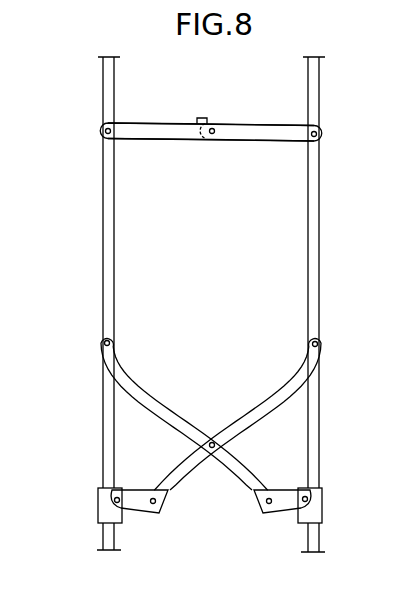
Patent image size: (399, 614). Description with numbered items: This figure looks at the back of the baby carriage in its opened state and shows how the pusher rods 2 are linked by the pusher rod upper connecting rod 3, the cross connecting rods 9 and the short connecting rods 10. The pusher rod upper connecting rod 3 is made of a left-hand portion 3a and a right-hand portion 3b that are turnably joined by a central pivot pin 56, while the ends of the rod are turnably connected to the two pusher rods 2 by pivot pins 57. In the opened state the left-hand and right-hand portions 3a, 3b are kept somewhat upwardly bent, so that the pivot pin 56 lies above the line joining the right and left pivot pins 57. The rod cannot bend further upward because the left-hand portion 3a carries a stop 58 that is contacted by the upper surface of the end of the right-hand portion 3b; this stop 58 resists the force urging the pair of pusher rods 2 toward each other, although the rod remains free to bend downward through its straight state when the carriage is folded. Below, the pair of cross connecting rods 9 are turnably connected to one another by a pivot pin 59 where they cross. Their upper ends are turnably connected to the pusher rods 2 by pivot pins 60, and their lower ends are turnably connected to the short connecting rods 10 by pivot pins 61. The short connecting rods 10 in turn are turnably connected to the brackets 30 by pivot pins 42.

The pusher rods 2 is at (113, 258).
The pusher rod upper connecting rod 3 is at (206, 132).
The left-hand portion 3a is at (154, 137).
The right-hand portion 3b is at (265, 141).
The pivot pin 56 is at (212, 137).
The pivot pins 57 is at (100, 131).
The stop 58 is at (200, 117).
The cross connecting rods 9 is at (257, 415).
The pivot pin 59 is at (212, 449).
The pivot pins 60 is at (100, 344).
The pivot pins 61 is at (158, 504).
The short connecting rods 10 is at (142, 509).
The brackets 30 is at (100, 512).
The pivot pins 42 is at (113, 498).